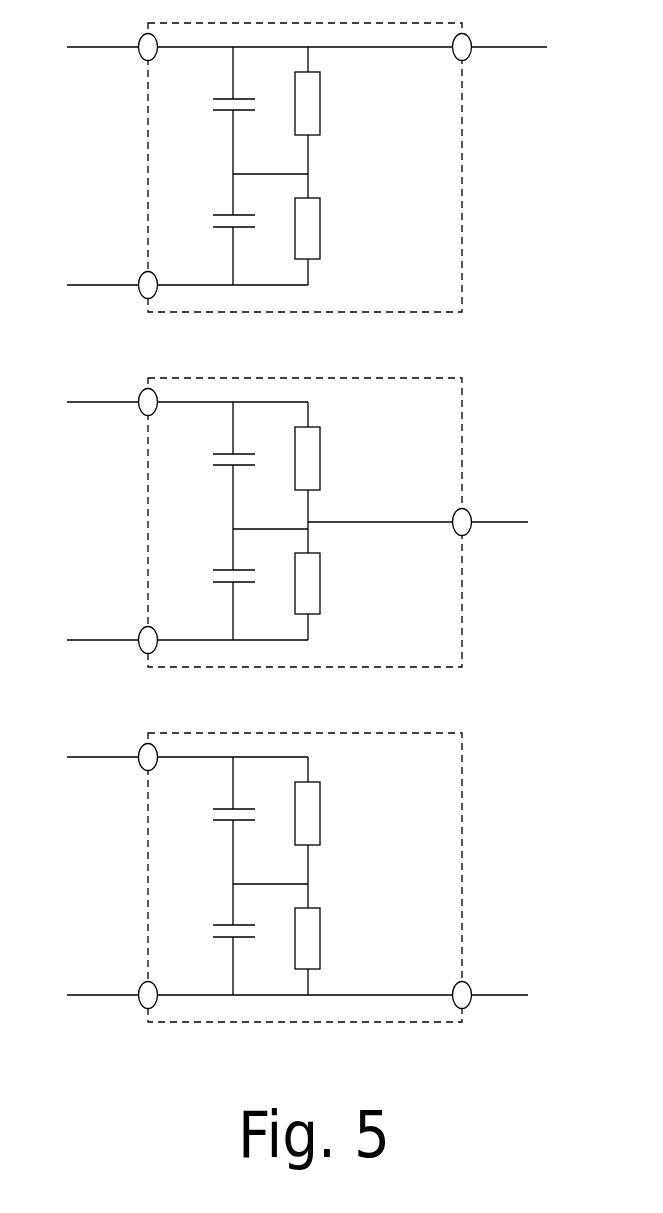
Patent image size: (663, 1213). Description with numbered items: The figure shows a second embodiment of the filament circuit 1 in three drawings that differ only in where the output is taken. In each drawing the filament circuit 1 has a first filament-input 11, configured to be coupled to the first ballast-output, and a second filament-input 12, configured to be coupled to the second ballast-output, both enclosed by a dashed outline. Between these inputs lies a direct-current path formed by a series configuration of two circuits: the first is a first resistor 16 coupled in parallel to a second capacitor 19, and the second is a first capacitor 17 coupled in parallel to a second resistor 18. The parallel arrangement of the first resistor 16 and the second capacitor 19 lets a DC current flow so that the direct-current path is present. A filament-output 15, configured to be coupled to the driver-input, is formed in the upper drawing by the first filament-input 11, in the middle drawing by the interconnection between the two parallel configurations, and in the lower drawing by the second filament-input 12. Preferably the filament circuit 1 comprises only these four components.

The filament circuit 1 is at (412, 1028).
The first filament-input 11 is at (141, 768).
The second filament-input 12 is at (141, 985).
The filament-output 15 is at (478, 1015).
The first resistor 16 is at (332, 812).
The first capacitor 17 is at (226, 584).
The second resistor 18 is at (332, 938).
The second capacitor 19 is at (226, 465).